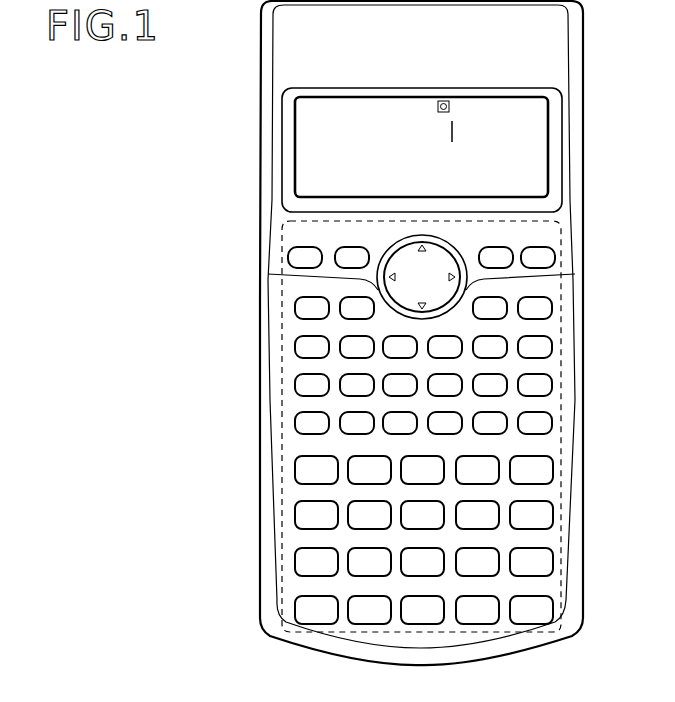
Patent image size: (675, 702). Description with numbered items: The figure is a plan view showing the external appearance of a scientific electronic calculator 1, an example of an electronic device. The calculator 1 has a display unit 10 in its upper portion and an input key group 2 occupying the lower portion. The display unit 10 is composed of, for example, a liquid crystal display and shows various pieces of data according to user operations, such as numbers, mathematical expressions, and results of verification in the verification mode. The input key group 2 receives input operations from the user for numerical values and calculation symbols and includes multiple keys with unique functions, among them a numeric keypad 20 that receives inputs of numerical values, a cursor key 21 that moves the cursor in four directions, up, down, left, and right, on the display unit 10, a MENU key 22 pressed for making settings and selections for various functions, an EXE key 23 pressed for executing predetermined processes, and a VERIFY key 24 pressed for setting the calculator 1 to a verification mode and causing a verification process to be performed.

The scientific electronic calculator 1 is at (248, 53).
The input key group 2 is at (563, 395).
The display unit 10 is at (547, 130).
The numeric keypad 20 is at (302, 510).
The cursor key 21 is at (403, 293).
The MENU key 22 is at (497, 267).
The EXE key 23 is at (297, 423).
The VERIFY key 24 is at (343, 263).